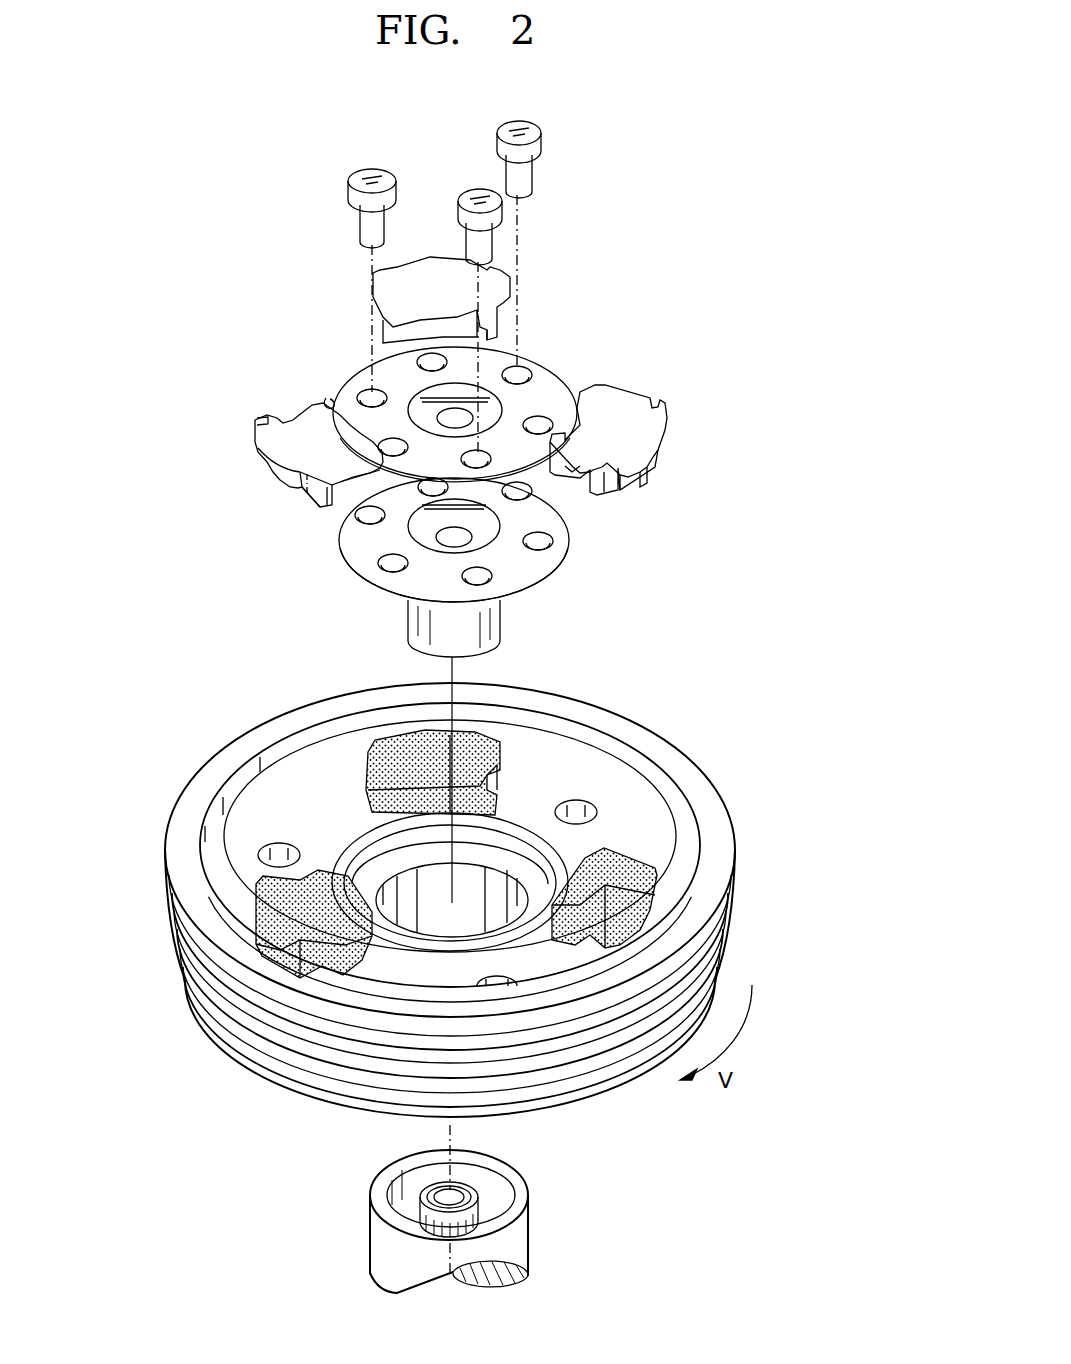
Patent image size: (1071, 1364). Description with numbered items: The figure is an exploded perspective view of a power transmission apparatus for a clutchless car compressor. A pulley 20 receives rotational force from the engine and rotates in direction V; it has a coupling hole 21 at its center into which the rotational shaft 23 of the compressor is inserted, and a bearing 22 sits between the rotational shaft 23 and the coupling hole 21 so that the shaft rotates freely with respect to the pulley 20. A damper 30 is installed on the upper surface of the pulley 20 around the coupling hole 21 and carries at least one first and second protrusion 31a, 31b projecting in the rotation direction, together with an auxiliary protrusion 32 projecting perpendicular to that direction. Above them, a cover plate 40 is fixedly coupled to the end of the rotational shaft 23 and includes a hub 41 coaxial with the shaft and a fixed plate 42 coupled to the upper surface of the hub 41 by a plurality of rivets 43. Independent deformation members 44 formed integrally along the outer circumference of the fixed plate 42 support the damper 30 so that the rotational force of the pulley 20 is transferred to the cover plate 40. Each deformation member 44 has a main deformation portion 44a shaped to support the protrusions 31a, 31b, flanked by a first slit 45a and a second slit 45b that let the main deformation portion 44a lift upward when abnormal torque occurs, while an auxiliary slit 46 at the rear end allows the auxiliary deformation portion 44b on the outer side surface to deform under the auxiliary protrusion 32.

The pulley 20 is at (726, 949).
The coupling hole 21 is at (408, 902).
The bearing 22 is at (390, 867).
The rotational shaft 23 is at (474, 1203).
The damper 30 is at (617, 852).
The first protrusion 31a is at (498, 752).
The second protrusion 31b is at (512, 745).
The auxiliary protrusion 32 is at (452, 727).
The cover plate 40 is at (529, 339).
The hub 41 is at (543, 573).
The fixed plate 42 is at (550, 383).
The rivet 43 is at (384, 227).
The deformation member 44 is at (617, 400).
The main deformation portion 44a is at (573, 473).
The auxiliary deformation portion 44b is at (655, 476).
The first slit 45a is at (262, 420).
The second slit 45b is at (330, 404).
The auxiliary slit 46 is at (310, 470).